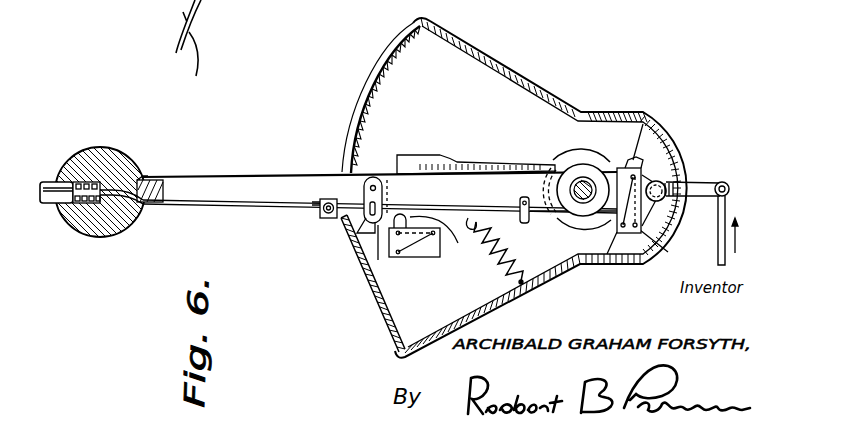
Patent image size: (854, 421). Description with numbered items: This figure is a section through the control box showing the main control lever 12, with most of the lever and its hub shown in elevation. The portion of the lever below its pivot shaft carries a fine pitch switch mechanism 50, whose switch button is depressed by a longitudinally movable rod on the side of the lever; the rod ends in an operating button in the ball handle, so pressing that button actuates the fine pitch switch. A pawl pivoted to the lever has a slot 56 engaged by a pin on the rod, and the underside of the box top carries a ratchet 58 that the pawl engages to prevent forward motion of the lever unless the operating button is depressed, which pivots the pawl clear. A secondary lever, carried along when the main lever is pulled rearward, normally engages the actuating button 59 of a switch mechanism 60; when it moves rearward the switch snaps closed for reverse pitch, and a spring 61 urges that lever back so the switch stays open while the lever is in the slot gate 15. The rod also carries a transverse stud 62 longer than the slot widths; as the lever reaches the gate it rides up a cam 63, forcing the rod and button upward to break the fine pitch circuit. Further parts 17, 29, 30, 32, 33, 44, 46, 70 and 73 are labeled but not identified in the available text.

The housing 17 is at (643, 112).
The fine pitch switch mechanism 50 is at (377, 75).
The slot 56 is at (375, 299).
The ball body 44 is at (92, 250).
The plug 33 is at (45, 181).
The bar 32 is at (303, 176).
The transverse stud 62 is at (278, 206).
The rack 46 is at (478, 158).
The cam 63 is at (340, 174).
The spring 61 is at (361, 201).
The guide block 70 is at (325, 218).
The slotted plate 73 is at (358, 250).
The switch mechanism 60 is at (417, 258).
The actuating button 59 is at (462, 238).
The ratchet 58 is at (487, 243).
The slot gate 15 is at (612, 233).
The main control lever 12 is at (649, 232).
The crank arm 29 is at (697, 182).
The handle 30 is at (727, 208).